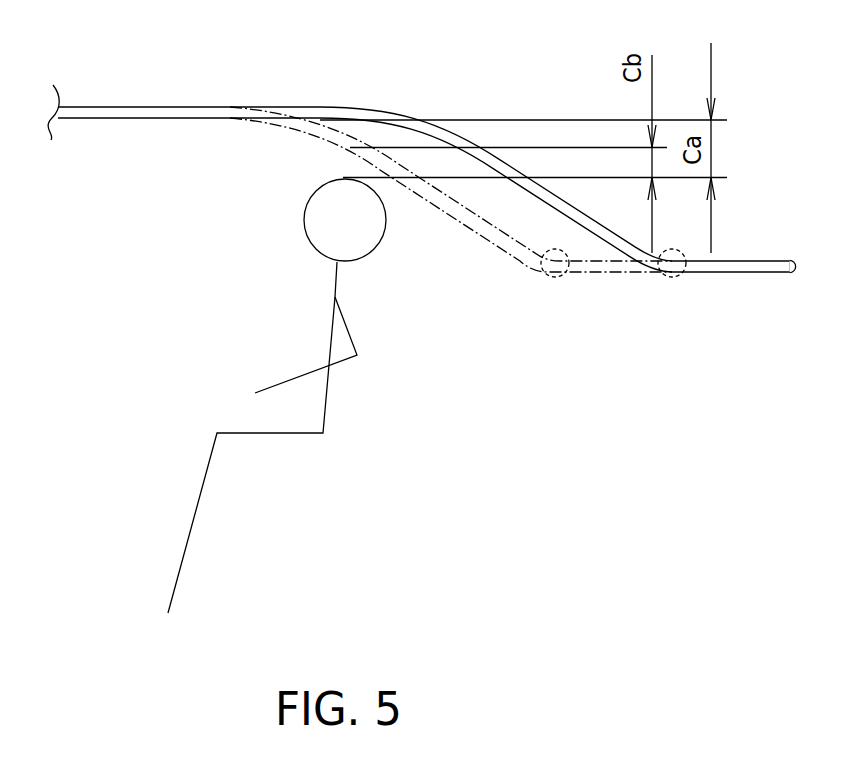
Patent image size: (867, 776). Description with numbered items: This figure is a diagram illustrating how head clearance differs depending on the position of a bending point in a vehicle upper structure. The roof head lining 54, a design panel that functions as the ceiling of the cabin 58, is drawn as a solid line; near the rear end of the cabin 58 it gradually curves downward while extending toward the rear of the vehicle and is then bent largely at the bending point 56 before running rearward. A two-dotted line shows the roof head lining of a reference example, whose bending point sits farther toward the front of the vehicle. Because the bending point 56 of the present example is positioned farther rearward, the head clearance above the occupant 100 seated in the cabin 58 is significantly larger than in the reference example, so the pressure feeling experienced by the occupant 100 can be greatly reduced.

The roof head lining 54 is at (159, 106).
The bending point 56 is at (672, 278).
The cabin 58 is at (252, 296).
The occupant 100 is at (375, 249).